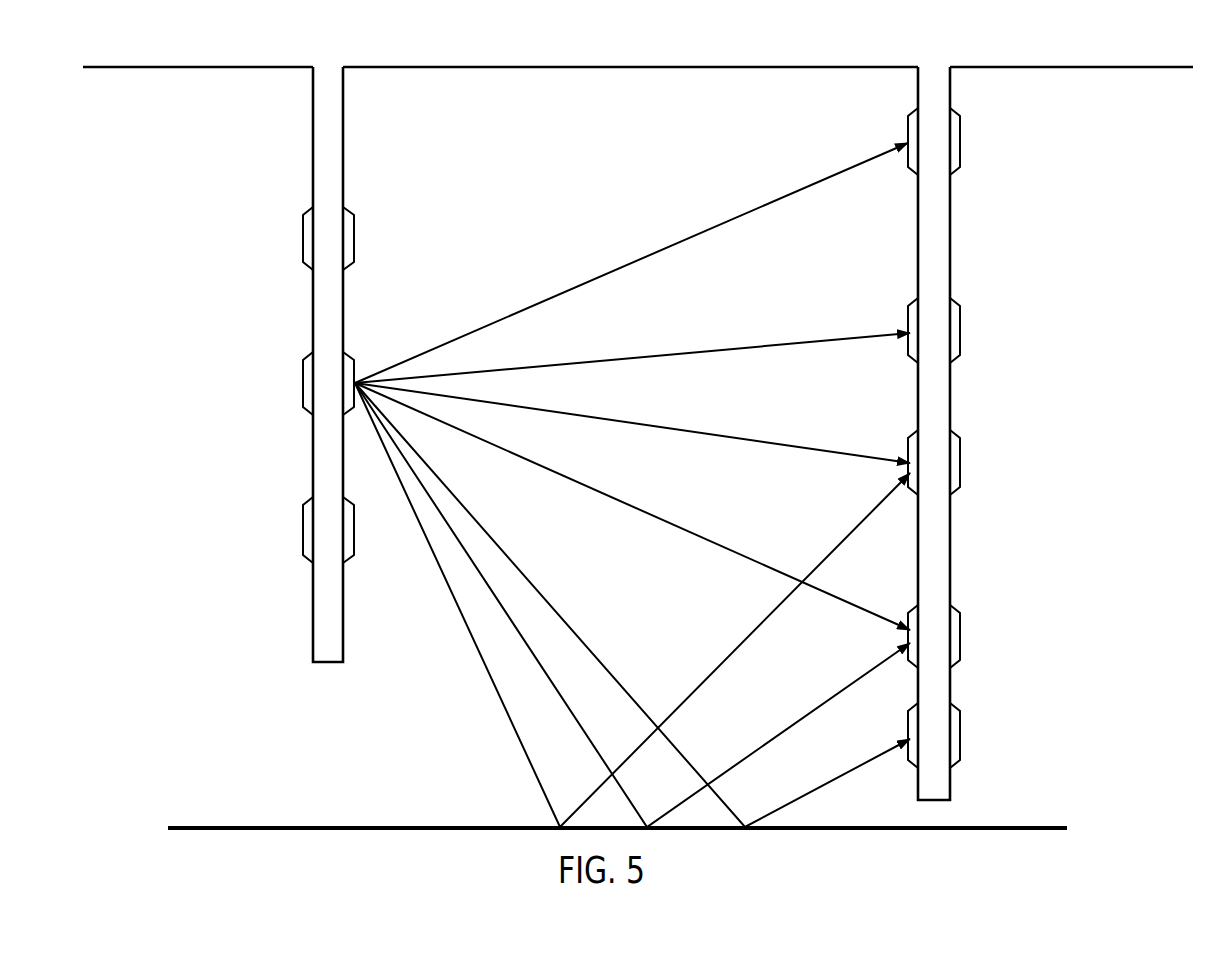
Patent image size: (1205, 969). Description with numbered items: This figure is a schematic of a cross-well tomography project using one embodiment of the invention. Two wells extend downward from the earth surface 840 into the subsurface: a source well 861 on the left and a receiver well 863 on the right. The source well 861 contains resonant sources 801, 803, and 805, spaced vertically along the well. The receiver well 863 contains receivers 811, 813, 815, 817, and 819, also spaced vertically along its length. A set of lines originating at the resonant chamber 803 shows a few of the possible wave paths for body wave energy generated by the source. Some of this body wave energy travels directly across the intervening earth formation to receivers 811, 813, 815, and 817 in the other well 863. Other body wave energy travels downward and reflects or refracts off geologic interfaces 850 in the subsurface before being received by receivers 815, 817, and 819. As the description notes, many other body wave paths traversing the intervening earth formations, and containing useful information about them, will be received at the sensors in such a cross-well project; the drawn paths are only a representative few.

The earth formation surface 840 is at (126, 67).
The geologic interfaces 850 is at (197, 827).
The source well 861 is at (326, 58).
The receiver well 863 is at (931, 58).
The resonant source 801 is at (303, 237).
The resonant chamber 803 is at (303, 383).
The resonant source 805 is at (303, 532).
The receiver 811 is at (960, 140).
The receiver 813 is at (960, 323).
The receiver 815 is at (960, 462).
The receiver 817 is at (960, 630).
The receiver 819 is at (960, 732).